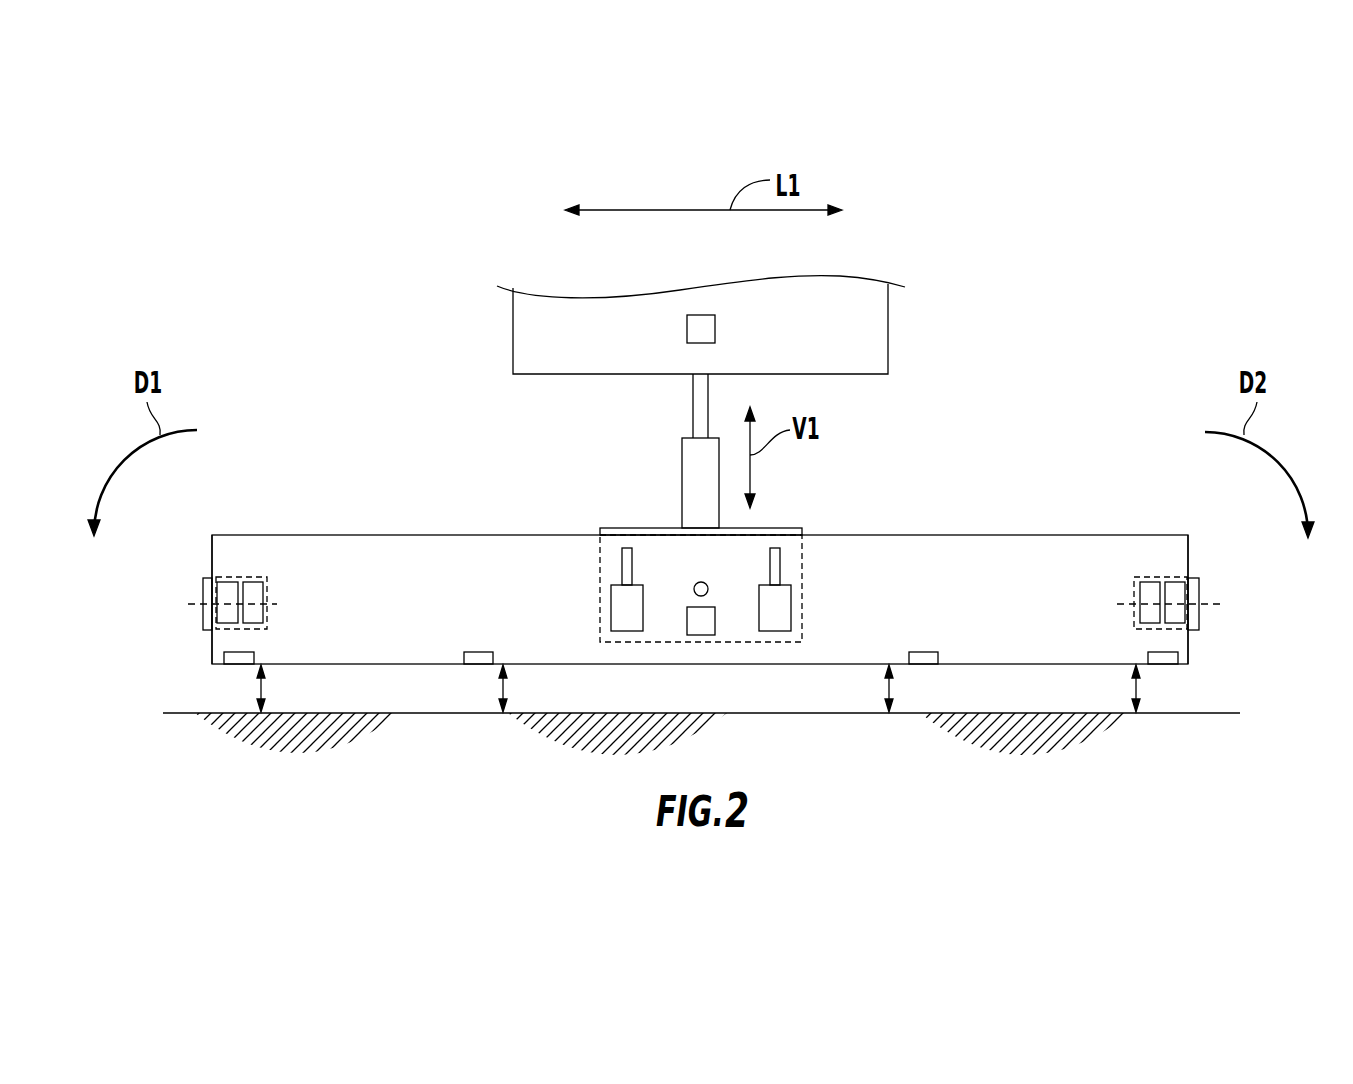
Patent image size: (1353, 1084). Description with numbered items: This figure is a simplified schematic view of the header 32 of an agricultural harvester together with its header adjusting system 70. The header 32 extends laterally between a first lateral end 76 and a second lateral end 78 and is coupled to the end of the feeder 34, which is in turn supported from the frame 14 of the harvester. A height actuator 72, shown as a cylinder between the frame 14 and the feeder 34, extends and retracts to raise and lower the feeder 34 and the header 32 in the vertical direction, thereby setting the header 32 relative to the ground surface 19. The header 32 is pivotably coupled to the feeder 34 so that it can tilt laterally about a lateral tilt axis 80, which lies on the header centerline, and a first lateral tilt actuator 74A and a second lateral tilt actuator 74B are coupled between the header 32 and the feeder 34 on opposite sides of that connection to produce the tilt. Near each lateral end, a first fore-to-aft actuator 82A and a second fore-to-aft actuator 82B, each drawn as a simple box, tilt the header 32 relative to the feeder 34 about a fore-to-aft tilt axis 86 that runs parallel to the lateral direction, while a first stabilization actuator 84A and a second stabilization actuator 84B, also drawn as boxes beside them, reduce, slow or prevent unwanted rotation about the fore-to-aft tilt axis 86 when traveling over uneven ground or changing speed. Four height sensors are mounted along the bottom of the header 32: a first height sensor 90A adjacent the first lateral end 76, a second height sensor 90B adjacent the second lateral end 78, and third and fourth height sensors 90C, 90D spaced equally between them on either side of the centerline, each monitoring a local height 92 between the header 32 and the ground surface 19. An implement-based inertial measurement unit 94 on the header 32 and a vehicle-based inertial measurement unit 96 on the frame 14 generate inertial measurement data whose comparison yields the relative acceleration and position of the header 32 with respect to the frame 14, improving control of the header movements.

The frame 14 is at (513, 336).
The ground surface 19 is at (185, 712).
The header 32 is at (412, 528).
The feeder 34 is at (780, 528).
The header adjusting system 70 is at (1043, 432).
The height actuator 72 is at (682, 497).
The first lateral tilt actuator 74A is at (620, 608).
The second lateral tilt actuator 74B is at (782, 608).
The first lateral end 76 is at (212, 562).
The second lateral end 78 is at (1188, 553).
The lateral tilt axis 80 is at (701, 582).
The first fore-to-aft actuator 82A is at (226, 582).
The second fore-to-aft actuator 82B is at (1172, 582).
The first stabilization actuator 84A is at (258, 582).
The second stabilization actuator 84B is at (1147, 582).
The fore-to-aft tilt axis 86 is at (196, 605).
The first height sensor 90A is at (248, 652).
The second height sensor 90B is at (1150, 652).
The third height sensor 90C is at (480, 652).
The fourth height sensor 90D is at (923, 652).
The local height 92 is at (257, 688).
The implement-based inertial measurement unit 94 is at (715, 628).
The vehicle-based inertial measurement unit 96 is at (715, 333).